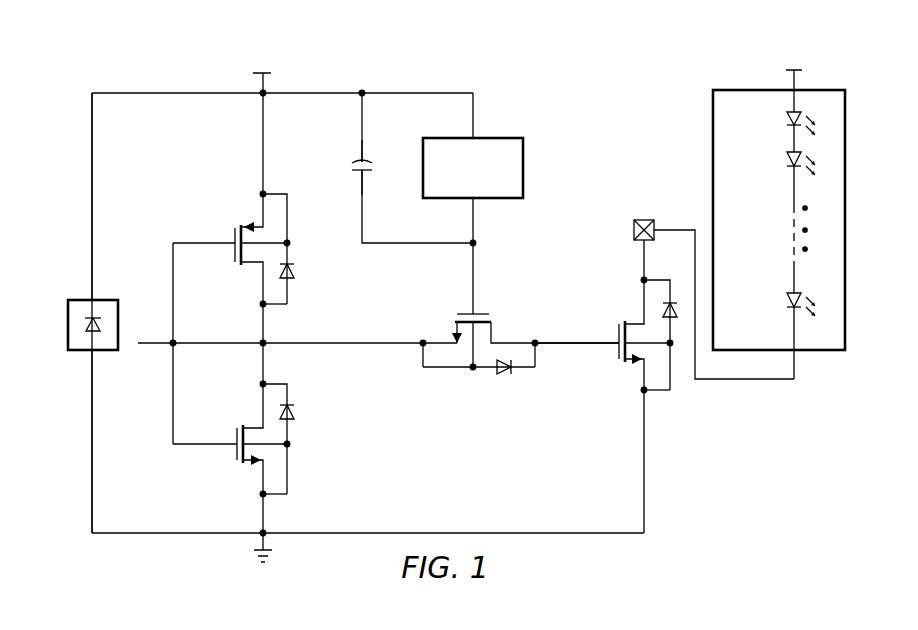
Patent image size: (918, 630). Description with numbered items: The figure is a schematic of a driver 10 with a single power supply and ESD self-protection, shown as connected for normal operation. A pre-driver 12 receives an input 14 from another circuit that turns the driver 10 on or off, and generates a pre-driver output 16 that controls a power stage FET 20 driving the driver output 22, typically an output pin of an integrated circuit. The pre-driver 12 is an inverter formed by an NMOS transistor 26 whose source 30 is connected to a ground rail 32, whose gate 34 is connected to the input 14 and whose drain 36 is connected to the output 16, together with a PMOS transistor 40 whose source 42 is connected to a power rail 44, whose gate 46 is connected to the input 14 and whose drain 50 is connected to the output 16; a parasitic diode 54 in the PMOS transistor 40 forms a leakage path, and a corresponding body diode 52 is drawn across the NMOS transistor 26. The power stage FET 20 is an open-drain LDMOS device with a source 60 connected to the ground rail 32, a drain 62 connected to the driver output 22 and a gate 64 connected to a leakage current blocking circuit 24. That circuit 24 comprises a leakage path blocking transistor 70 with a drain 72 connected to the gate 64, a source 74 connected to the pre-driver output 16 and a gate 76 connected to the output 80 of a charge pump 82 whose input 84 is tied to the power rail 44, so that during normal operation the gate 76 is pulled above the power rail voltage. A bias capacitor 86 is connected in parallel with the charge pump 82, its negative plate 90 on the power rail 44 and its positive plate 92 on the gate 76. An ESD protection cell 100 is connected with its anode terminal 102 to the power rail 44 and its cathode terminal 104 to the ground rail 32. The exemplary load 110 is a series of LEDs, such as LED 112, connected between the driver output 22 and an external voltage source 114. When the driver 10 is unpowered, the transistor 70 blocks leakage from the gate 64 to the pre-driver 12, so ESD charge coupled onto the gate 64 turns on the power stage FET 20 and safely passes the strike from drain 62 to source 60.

The driver 10 is at (72, 54).
The pre-driver 12 is at (200, 186).
The input 14 is at (152, 345).
The pre-driver output 16 is at (311, 343).
The power stage FET 20 is at (618, 330).
The driver output 22 is at (645, 219).
The leakage current blocking circuit 24 is at (457, 63).
The NMOS transistor 26 is at (236, 432).
The source 30 is at (262, 477).
The ground rail 32 is at (305, 533).
The gate 34 is at (222, 445).
The drain 36 is at (262, 412).
The PMOS transistor 40 is at (234, 255).
The source 42 is at (262, 212).
The power rail 44 is at (311, 92).
The gate 46 is at (216, 243).
The drain 50 is at (262, 278).
The body diode of transistor 26 52 is at (293, 410).
The parasitic diode 54 is at (293, 270).
The source 60 is at (643, 373).
The drain 62 is at (643, 310).
The gate 64 is at (604, 345).
The leakage path blocking transistor 70 is at (486, 313).
The drain 72 is at (547, 342).
The source 74 is at (410, 342).
The gate 76 is at (472, 262).
The output 80 is at (474, 216).
The charge pump 82 is at (524, 166).
The input 84 is at (474, 118).
The bias capacitor 86 is at (370, 175).
The negative plate 90 is at (360, 156).
The positive plate 92 is at (360, 182).
The ESD protection cell 100 is at (106, 299).
The anode terminal 102 is at (90, 298).
The cathode terminal 104 is at (91, 352).
The load 110 is at (704, 146).
The LED 112 is at (787, 118).
The external voltage source 114 is at (788, 72).